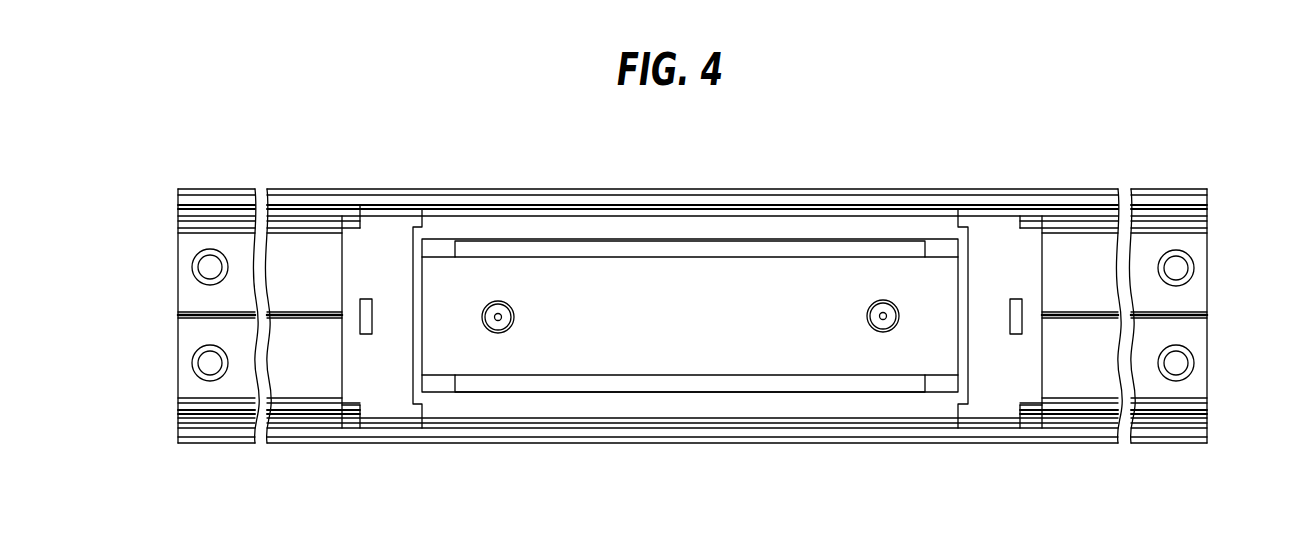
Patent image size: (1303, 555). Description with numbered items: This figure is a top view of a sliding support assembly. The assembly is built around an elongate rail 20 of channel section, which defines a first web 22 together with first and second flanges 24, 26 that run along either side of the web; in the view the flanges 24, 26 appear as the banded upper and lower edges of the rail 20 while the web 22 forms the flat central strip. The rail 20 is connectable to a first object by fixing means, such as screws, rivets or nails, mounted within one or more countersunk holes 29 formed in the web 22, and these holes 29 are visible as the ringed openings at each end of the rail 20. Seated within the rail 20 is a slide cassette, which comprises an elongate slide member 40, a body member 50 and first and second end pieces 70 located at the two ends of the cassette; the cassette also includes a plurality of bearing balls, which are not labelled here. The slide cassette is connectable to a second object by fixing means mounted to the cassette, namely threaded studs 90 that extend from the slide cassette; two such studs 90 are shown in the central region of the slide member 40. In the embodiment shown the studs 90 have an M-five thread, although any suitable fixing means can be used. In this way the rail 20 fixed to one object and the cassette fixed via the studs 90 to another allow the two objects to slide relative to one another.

The rail 20 is at (238, 447).
The first web 22 is at (190, 330).
The first flange 24 is at (203, 200).
The second flange 26 is at (197, 432).
The countersunk holes 29 is at (202, 270).
The elongate slide member 40 is at (800, 265).
The body member 50 is at (530, 230).
The end pieces 70 is at (388, 228).
The threaded studs 90 is at (513, 318).